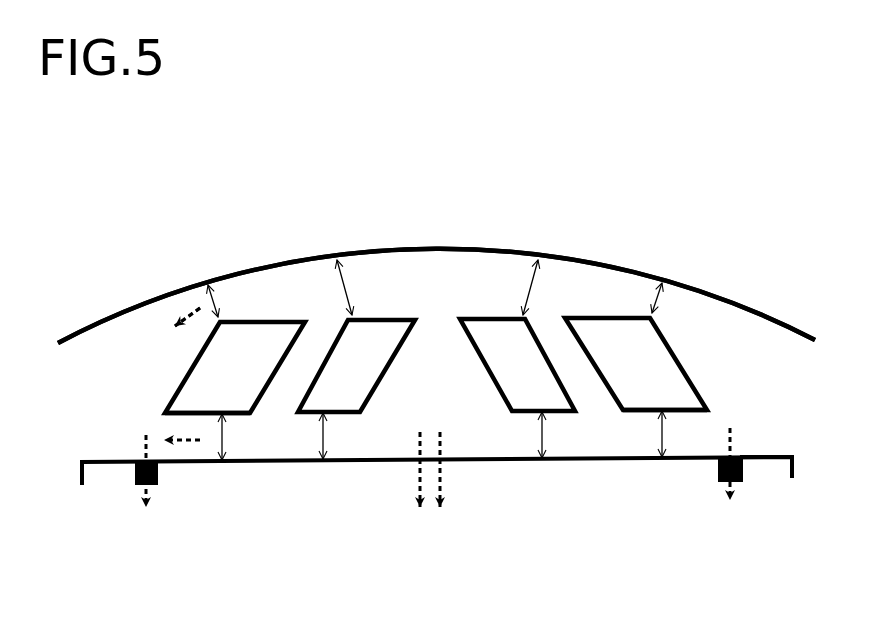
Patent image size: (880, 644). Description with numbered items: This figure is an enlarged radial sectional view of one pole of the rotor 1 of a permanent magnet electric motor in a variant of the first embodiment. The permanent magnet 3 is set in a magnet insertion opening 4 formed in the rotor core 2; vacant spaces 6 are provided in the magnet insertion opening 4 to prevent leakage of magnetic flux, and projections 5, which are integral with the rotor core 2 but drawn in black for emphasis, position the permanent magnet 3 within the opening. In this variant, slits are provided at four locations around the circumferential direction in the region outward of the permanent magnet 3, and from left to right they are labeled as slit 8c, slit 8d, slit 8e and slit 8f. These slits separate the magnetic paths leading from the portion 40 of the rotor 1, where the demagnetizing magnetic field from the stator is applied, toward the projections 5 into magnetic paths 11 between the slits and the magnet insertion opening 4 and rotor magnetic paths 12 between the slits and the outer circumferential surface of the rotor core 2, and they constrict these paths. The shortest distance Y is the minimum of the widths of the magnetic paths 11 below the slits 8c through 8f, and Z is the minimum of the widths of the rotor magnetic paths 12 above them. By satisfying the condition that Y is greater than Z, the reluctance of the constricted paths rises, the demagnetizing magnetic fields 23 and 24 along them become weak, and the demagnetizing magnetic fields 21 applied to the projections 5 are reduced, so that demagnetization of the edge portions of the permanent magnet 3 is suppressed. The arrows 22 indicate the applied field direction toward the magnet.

The rotor 1 is at (736, 295).
The rotor core 2 is at (748, 327).
The permanent magnet 3 is at (363, 470).
The magnet insertion opening 4 is at (781, 473).
The projections 5 is at (735, 455).
The vacant spaces 6 is at (755, 473).
The slit 8c is at (303, 330).
The slit 8d is at (373, 322).
The slit 8e is at (487, 322).
The slit 8f is at (588, 348).
The magnetic paths 11 is at (187, 427).
The rotor magnetic paths 12 is at (199, 304).
The demagnetizing magnetic fields 21 is at (143, 495).
The pressing direction 22 is at (440, 482).
The demagnetizing magnetic fields 23 is at (185, 316).
The demagnetizing magnetic fields 24 is at (160, 437).
The portion of the rotor 40 is at (437, 262).